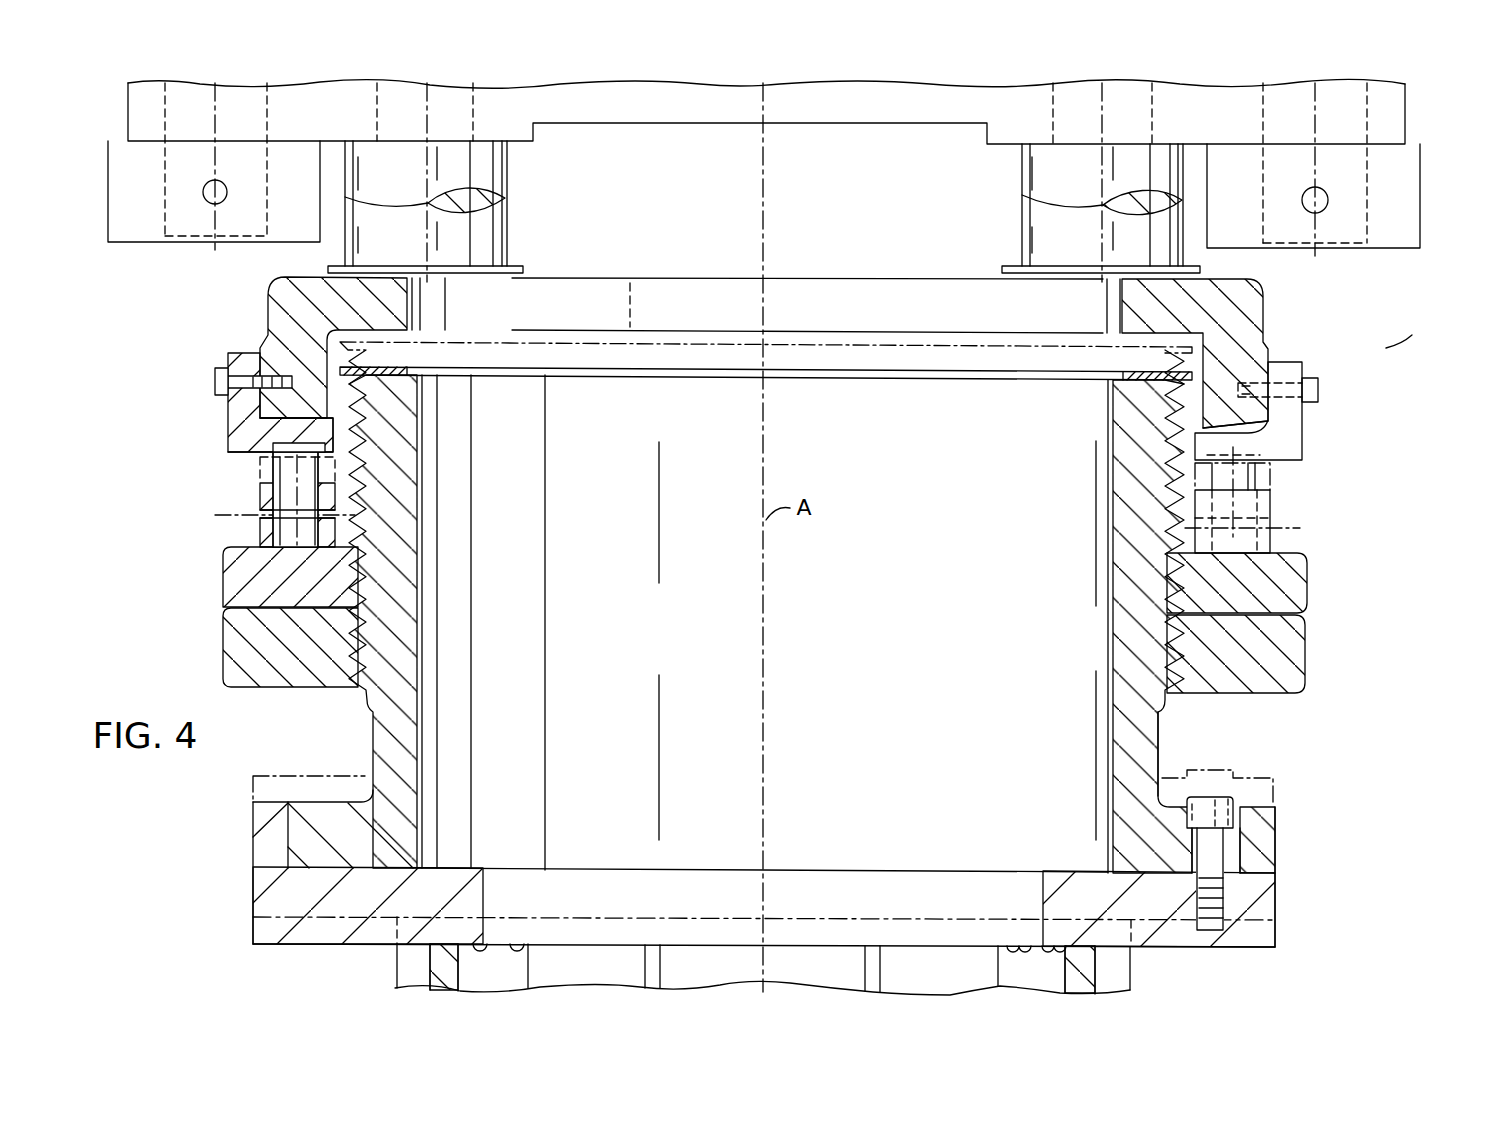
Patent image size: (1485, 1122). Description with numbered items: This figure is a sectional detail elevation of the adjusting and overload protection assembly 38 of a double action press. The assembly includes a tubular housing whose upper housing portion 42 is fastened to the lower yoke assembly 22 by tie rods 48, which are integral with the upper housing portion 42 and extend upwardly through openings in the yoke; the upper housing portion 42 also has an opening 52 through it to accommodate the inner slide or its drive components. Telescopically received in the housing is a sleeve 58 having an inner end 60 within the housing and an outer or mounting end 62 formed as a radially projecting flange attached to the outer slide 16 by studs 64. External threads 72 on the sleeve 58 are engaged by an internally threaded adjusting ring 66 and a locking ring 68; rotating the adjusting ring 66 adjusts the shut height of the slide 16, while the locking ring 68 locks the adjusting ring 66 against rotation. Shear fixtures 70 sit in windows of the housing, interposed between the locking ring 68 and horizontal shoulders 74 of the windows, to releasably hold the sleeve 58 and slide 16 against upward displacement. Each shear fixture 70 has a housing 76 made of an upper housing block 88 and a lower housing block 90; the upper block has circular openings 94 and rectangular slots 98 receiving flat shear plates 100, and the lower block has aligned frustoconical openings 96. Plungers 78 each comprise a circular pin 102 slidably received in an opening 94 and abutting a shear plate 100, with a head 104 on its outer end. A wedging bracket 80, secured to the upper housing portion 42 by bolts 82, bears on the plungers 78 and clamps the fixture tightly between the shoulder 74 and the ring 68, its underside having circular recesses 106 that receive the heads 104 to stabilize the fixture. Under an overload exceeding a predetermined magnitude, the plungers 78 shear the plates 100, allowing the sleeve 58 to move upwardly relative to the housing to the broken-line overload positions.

The outer slide 16 is at (1115, 979).
The lower yoke assembly 22 is at (1396, 121).
The adjusting and overload protection assembly 38 is at (1383, 349).
The upper housing portion 42 is at (1247, 326).
The tie rods 48 is at (495, 228).
The opening 52 is at (1118, 312).
The sleeve 58 is at (1127, 633).
The inner end 60 is at (1135, 398).
The outer or mounting end 62 is at (1130, 838).
The studs 64 is at (1215, 802).
The adjusting ring 66 is at (1295, 665).
The locking ring 68 is at (1297, 582).
The shear fixtures 70 is at (769, 486).
The external threads 72 is at (1200, 697).
The horizontal shoulders 74 is at (1255, 431).
The housing 76 is at (1285, 503).
The plungers 78 is at (1266, 478).
The wedging bracket 80 is at (245, 410).
The bolts 82 is at (216, 383).
The upper housing block 88 is at (1265, 512).
The lower housing block 90 is at (1262, 546).
The circular openings 94 is at (282, 487).
The frustoconical openings 96 is at (283, 533).
The rectangular slots 98 is at (265, 517).
The shear plate 100 is at (357, 512).
The circular pin 102 is at (310, 469).
The head 104 is at (265, 438).
The circular recesses 106 is at (318, 443).